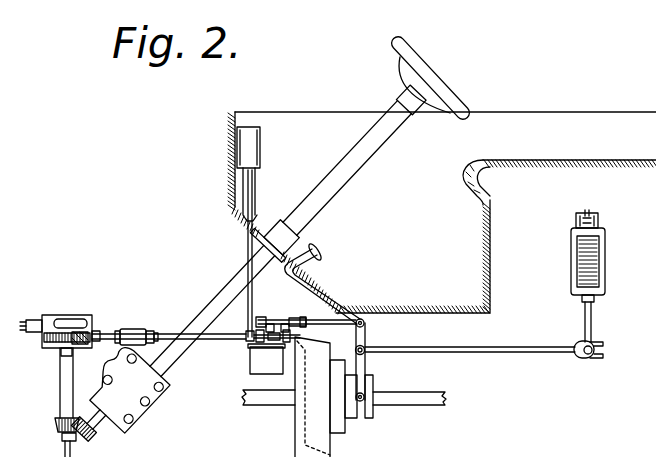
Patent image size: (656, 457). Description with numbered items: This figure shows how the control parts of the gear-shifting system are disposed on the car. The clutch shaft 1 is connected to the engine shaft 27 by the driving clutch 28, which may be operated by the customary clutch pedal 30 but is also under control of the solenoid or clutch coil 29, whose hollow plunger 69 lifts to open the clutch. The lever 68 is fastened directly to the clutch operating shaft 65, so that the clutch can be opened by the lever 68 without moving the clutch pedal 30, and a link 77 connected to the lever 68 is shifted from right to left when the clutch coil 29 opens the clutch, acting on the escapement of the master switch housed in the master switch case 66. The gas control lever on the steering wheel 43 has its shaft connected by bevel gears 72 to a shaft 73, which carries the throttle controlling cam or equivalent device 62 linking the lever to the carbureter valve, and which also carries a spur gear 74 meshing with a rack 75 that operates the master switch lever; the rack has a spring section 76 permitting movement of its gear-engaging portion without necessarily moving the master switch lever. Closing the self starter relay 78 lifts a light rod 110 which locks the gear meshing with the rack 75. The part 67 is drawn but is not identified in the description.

The clutch shaft 1 is at (412, 403).
The engine shaft 27 is at (256, 402).
The driving clutch 28 is at (298, 446).
The solenoid 29 is at (572, 265).
The clutch pedal 30 is at (322, 248).
The steering wheel 43 is at (438, 84).
The throttle controlling cam 62 is at (63, 319).
The clutch operating shaft 65 is at (366, 349).
The master switch case 66 is at (273, 349).
The dash board 67 is at (228, 185).
The clutch operating lever 68 is at (454, 351).
The hollow plunger 69 is at (592, 323).
The bevel gears 72 is at (57, 424).
The shaft 73 is at (60, 357).
The spur gear 74 is at (81, 345).
The rack 75 is at (107, 333).
The spring section 76 is at (132, 331).
The link 77 is at (355, 318).
The self starter relay 78 is at (258, 147).
The light rod 110 is at (250, 250).